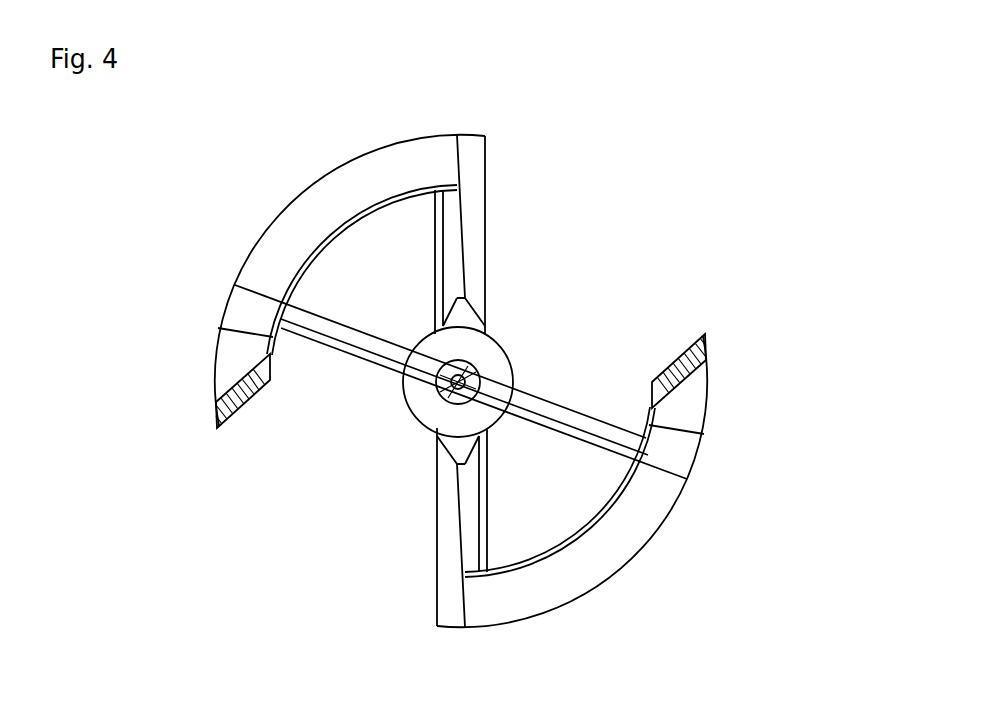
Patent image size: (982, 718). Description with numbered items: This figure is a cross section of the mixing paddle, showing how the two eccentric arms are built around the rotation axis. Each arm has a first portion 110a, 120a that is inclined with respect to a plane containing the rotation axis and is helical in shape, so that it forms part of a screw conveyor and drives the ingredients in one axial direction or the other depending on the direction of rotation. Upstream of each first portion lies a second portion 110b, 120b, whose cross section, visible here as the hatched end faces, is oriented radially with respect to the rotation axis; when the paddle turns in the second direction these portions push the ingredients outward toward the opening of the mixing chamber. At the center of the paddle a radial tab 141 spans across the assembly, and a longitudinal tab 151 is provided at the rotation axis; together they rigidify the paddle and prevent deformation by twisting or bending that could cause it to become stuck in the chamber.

The first portion 110a is at (277, 270).
The second portion 110b is at (216, 430).
The first portion 120a is at (570, 575).
The second portion 120b is at (682, 348).
The radial tab 141 is at (388, 352).
The longitudinal tab 151 is at (459, 381).